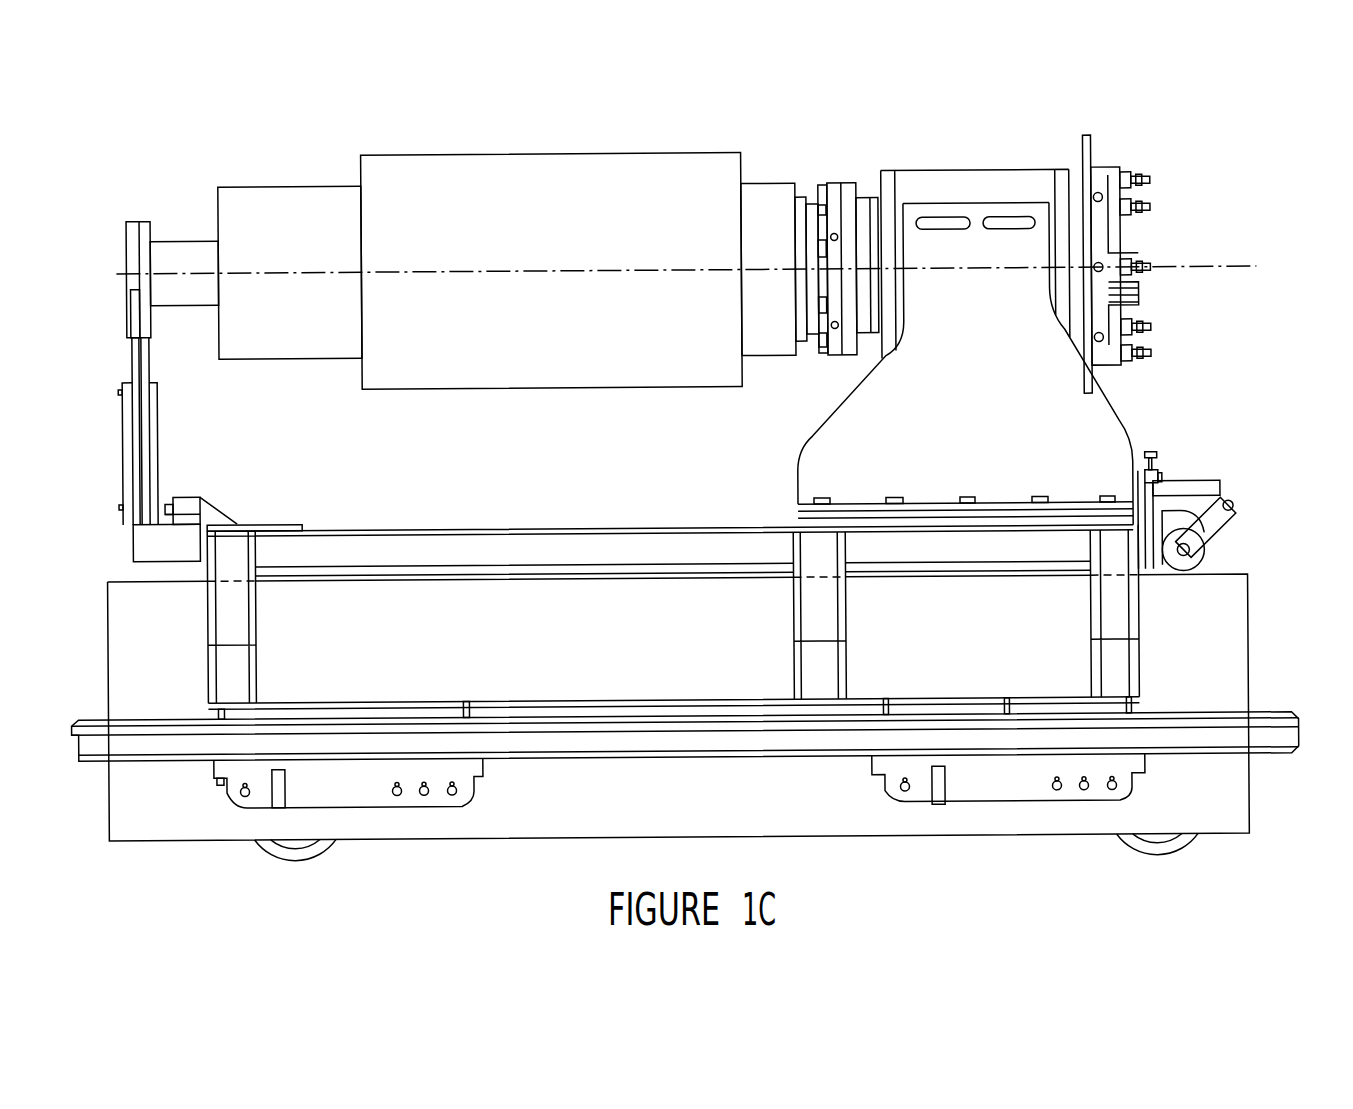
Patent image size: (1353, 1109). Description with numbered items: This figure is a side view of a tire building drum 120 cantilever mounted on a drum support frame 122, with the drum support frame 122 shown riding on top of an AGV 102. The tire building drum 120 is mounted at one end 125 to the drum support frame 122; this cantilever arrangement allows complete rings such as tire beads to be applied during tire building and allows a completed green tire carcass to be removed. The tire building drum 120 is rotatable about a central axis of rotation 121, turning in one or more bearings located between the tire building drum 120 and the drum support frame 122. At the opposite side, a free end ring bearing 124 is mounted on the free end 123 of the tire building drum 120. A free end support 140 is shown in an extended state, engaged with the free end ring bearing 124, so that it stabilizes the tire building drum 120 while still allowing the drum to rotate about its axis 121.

The AGV 102 is at (1225, 645).
The tire building drum 120 is at (780, 185).
The central axis of rotation 121 is at (1188, 266).
The drum support frame 122 is at (1080, 442).
The free end 123 is at (218, 155).
The free end ring bearing 124 is at (138, 218).
The one end 125 is at (868, 139).
The free end support 140 is at (177, 416).